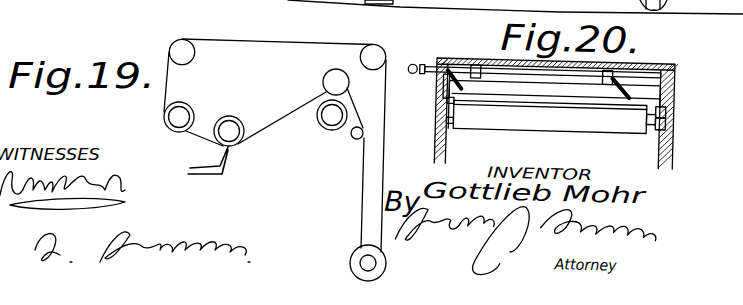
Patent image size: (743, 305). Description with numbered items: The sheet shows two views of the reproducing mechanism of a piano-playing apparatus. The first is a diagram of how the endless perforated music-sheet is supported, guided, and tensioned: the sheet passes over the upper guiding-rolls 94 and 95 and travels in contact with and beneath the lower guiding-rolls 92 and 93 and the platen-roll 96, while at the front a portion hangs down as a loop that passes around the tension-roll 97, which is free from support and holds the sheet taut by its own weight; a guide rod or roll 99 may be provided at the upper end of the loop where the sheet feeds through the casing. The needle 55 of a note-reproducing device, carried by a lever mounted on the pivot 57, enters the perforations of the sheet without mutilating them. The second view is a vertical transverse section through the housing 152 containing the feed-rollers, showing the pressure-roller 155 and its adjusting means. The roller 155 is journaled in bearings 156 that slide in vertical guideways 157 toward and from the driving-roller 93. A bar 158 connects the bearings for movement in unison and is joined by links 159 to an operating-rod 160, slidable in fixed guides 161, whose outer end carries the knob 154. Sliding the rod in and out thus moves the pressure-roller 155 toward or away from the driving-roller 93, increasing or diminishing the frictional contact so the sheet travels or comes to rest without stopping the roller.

In FIG. 19, the needle 55 is at (232, 170).
In FIG. 19, the pivot 57 is at (314, 92).
In FIG. 19, the lower guiding-roll 92 is at (179, 117).
In FIG. 19, the lower guiding-roll 93 is at (332, 115).
In FIG. 19, the upper guiding-roll 94 is at (182, 52).
In FIG. 19, the upper guiding-roll 95 is at (377, 54).
In FIG. 19, the platen-roll 96 is at (233, 115).
In FIG. 19, the tension-roll 97 is at (368, 263).
In FIG. 19, the guide rod or roll 99 is at (352, 139).
In FIG. 20, the housing 152 is at (647, 61).
In FIG. 20, the knob 154 is at (442, 69).
In FIG. 19, the pressure-roller 155 is at (334, 70).
In FIG. 20, the pressure-roller 155 is at (545, 116).
In FIG. 20, the bearings 156 is at (441, 117).
In FIG. 20, the vertical guideways 157 is at (448, 128).
In FIG. 20, the bar 158 is at (588, 94).
In FIG. 20, the links 159 is at (460, 57).
In FIG. 20, the operating-rod 160 is at (520, 75).
In FIG. 20, the fixed guides 161 is at (478, 77).